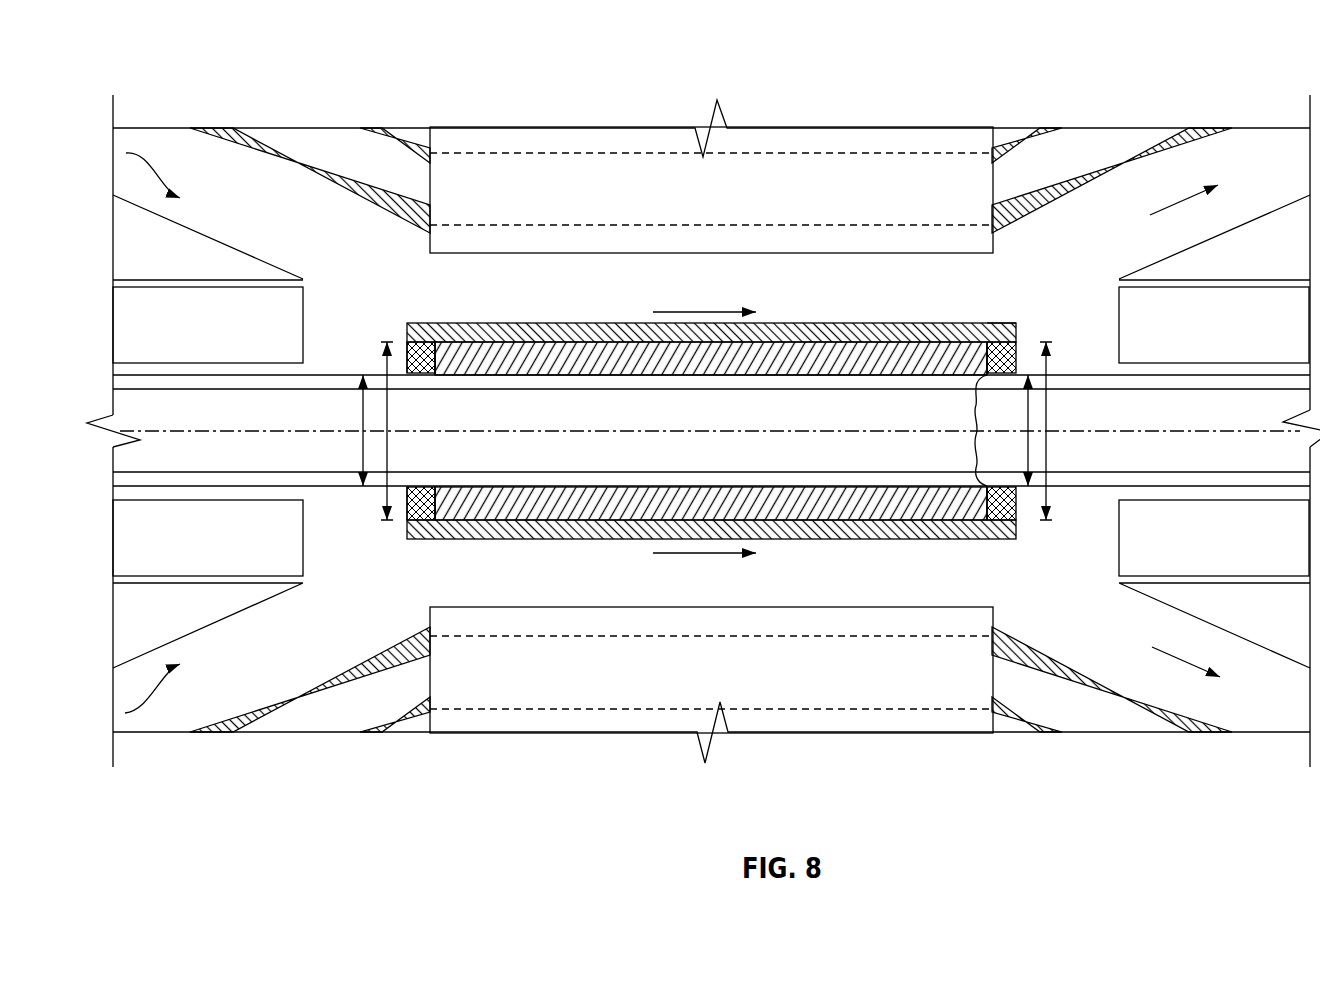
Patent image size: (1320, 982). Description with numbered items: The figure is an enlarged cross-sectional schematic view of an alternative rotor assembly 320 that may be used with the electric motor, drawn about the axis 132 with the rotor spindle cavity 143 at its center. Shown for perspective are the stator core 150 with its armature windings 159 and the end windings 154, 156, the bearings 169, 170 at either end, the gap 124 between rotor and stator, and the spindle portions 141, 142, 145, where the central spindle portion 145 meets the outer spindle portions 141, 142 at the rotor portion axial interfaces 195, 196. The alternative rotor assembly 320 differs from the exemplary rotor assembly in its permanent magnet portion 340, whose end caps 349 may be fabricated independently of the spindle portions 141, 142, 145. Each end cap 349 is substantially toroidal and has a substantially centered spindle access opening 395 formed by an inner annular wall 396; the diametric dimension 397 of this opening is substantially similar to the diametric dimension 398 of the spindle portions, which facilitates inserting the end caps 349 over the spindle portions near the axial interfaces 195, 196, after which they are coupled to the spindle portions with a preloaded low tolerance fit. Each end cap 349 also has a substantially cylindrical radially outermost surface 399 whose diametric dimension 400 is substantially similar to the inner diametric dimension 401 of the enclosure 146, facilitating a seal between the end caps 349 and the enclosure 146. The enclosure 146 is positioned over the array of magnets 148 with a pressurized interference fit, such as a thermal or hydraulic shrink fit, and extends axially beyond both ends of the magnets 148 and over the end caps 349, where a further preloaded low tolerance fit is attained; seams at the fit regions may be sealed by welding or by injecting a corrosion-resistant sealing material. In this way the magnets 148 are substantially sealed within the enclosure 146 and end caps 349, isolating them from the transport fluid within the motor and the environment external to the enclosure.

The alternative rotor assembly 320 is at (163, 70).
The gap 124 is at (540, 299).
The axis 132 is at (257, 430).
The spindle portion 141 is at (130, 373).
The spindle portion 142 is at (1283, 373).
The rotor spindle cavity 143 is at (218, 467).
The spindle portion 145 is at (612, 362).
The enclosure 146 is at (885, 330).
The magnets 148 is at (945, 352).
The stator core 150 is at (734, 197).
The end winding 154 is at (296, 178).
The end winding 156 is at (1043, 214).
The armature windings 159 is at (583, 709).
The bearing 169 is at (268, 342).
The bearing 170 is at (1206, 342).
The rotor portion axial interface 195 is at (407, 490).
The rotor portion axial interface 196 is at (975, 489).
The permanent magnet portion 340 is at (396, 290).
The end cap 349 is at (1018, 347).
The spindle access opening 395 is at (972, 397).
The inner annular wall 396 is at (428, 342).
The diametric dimension 397 is at (1028, 463).
The diametric dimension 398 is at (360, 423).
The radially outermost surface 399 is at (1010, 323).
The diametric dimension 400 is at (384, 357).
The inner diametric dimension 401 is at (1050, 360).